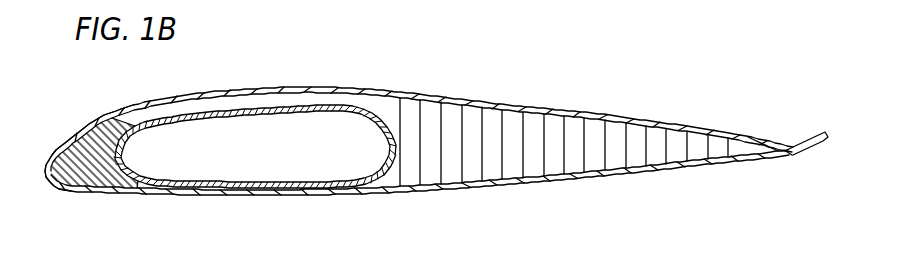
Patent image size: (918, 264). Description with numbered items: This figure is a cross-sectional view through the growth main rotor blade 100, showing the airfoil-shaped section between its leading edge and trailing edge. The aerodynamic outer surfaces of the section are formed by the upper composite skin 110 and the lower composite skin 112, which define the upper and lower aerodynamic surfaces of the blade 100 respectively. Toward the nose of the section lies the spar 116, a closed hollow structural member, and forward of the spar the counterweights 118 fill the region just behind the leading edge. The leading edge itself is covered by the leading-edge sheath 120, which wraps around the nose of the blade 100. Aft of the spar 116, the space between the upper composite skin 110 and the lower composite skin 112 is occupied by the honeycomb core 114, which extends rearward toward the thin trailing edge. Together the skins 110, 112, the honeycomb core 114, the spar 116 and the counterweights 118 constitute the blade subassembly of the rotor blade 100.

The main rotor blade 100 is at (594, 96).
The upper composite skin 110 is at (447, 97).
The lower composite skin 112 is at (425, 192).
The honeycomb core 114 is at (650, 145).
The spar 116 is at (338, 117).
The counterweight 118 is at (92, 160).
The leading-edge sheath 120 is at (110, 108).